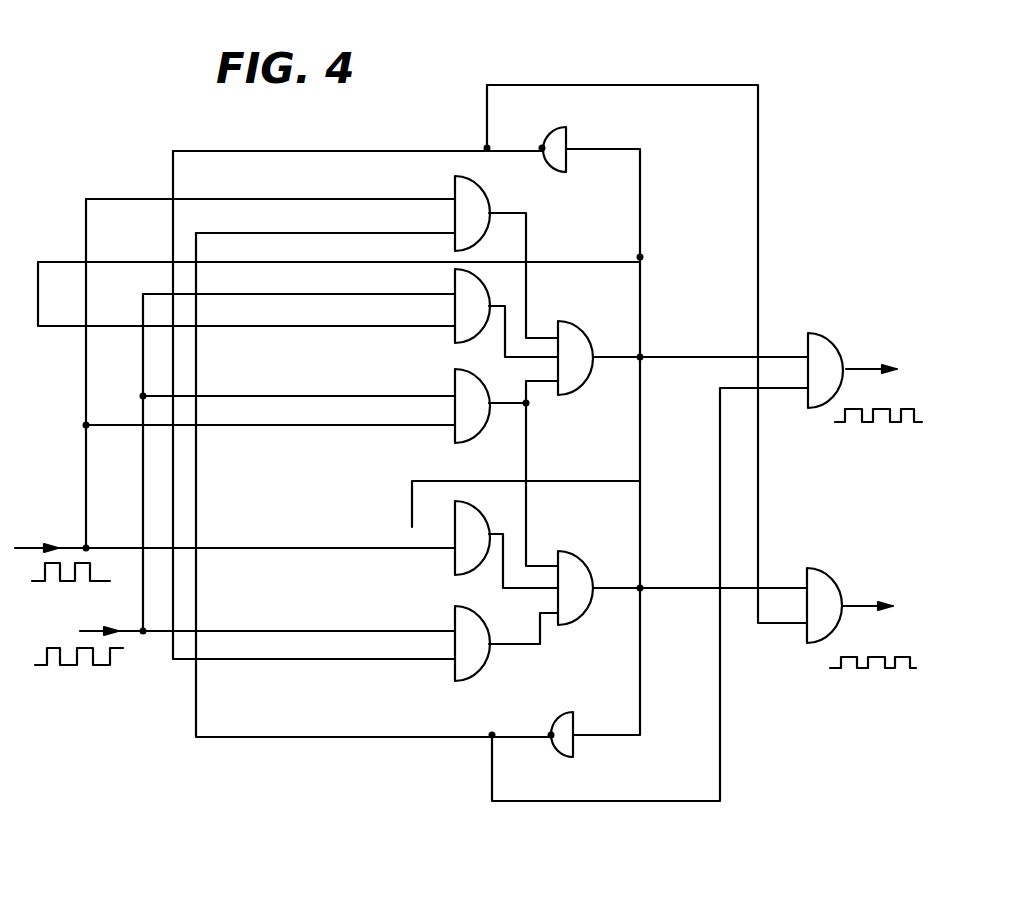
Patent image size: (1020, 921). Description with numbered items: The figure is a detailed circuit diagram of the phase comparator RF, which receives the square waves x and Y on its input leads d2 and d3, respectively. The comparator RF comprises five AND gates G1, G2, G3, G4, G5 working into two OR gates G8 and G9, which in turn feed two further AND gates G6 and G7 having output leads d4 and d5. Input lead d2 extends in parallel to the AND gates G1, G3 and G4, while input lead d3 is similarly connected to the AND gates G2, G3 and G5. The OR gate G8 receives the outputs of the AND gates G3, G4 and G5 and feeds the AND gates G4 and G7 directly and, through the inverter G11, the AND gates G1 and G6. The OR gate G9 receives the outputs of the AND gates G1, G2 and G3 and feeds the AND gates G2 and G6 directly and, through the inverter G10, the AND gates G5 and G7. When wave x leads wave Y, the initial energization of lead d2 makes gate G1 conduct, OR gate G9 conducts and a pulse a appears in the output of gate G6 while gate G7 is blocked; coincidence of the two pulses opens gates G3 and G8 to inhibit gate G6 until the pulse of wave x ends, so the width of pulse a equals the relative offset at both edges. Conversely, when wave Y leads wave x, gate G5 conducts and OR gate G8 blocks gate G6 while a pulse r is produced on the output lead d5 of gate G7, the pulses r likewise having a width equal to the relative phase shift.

The AND gate G1 is at (481, 198).
The AND gate G2 is at (479, 284).
The AND gate G3 is at (470, 428).
The AND gate G4 is at (487, 522).
The AND gate G5 is at (455, 672).
The AND gate G6 is at (835, 344).
The AND gate G7 is at (828, 576).
The OR gate G8 is at (580, 558).
The OR gate G9 is at (581, 331).
The inverter G10 is at (558, 142).
The inverter G11 is at (577, 722).
The input lead d2 is at (44, 533).
The input lead d3 is at (85, 621).
The output lead d4 is at (866, 368).
The output lead d5 is at (859, 605).
The square wave x is at (94, 581).
The square wave Y is at (80, 665).
The pulse a is at (906, 409).
The pulse r is at (884, 657).
The phase comparator RF is at (150, 688).